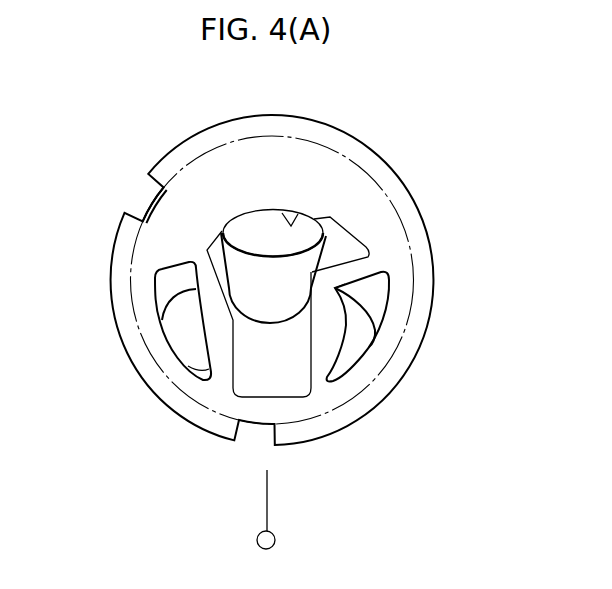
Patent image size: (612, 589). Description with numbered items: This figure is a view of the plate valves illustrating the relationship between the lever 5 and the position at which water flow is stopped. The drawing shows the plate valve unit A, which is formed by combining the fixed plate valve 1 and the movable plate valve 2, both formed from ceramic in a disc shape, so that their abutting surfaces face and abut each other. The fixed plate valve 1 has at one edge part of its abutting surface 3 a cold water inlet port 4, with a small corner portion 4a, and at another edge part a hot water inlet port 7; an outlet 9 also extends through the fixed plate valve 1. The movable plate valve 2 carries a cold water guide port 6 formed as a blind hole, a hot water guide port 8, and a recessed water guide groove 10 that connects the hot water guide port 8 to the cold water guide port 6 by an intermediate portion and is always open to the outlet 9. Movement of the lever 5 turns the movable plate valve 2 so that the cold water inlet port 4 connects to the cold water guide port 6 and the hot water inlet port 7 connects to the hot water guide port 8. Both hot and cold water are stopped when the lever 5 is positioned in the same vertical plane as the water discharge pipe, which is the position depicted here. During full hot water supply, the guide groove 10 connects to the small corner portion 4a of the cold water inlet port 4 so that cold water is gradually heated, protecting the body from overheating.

The plate valve unit A is at (208, 120).
The fixed plate valve 1 is at (168, 153).
The movable plate valve 2 is at (168, 380).
The abutting surface 3 is at (125, 243).
The cold water inlet port 4 is at (355, 353).
The small corner portion of cold water inlet port 4a is at (337, 289).
The lever 5 is at (265, 492).
The cold water guide port 6 is at (350, 247).
The hot water inlet port 7 is at (172, 323).
The hot water guide port 8 is at (287, 383).
The outlet 9 is at (291, 226).
The recessed water guide groove 10 is at (255, 335).